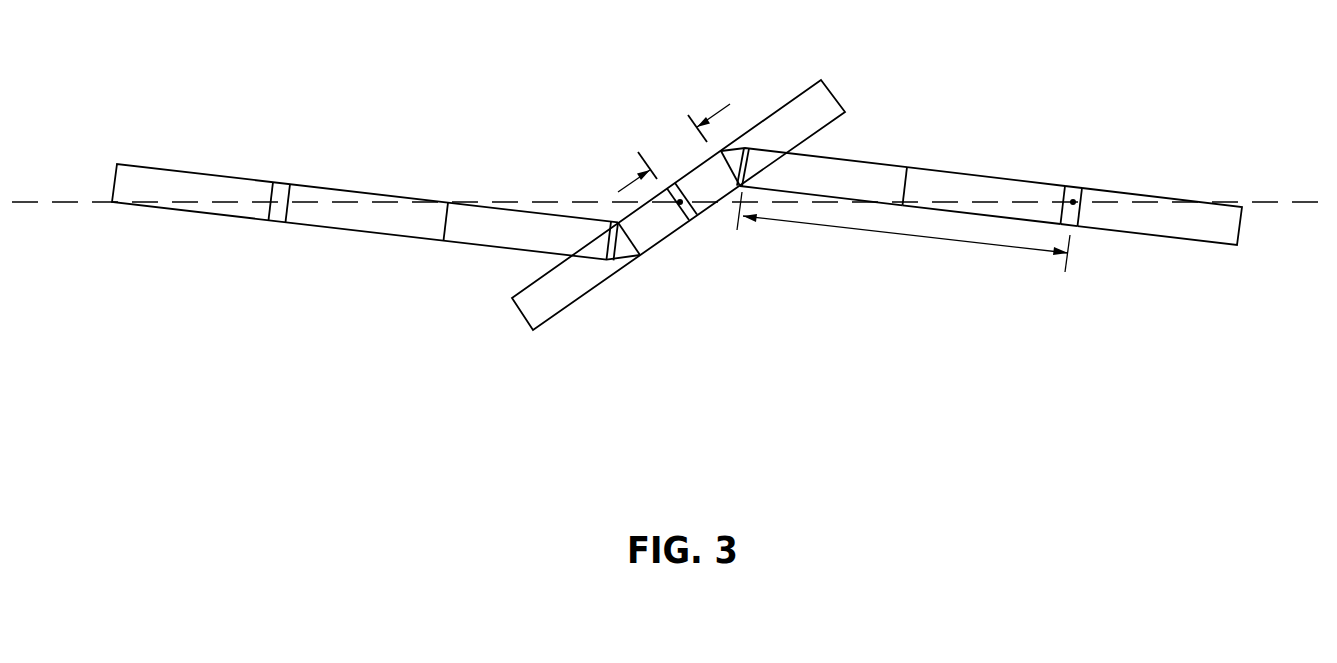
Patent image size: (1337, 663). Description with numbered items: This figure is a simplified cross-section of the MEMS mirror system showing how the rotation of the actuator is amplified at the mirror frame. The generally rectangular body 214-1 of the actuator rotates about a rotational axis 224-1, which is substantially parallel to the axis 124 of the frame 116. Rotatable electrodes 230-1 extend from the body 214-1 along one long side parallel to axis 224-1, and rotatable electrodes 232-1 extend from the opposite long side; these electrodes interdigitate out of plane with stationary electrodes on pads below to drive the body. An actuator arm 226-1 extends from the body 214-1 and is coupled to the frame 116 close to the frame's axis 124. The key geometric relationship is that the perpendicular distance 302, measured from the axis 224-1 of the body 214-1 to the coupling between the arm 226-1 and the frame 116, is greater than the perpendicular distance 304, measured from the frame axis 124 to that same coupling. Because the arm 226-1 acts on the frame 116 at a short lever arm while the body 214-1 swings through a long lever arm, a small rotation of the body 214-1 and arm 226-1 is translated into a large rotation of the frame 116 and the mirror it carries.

The frame 116 is at (827, 92).
The axis 124 is at (679, 206).
The perpendicular distance 304 is at (731, 104).
The perpendicular distance 302 is at (920, 237).
The actuator arm 226-1 is at (877, 168).
The rotatable electrodes 232-1 is at (988, 178).
The rotational axis 224-1 is at (1078, 188).
The body 214-1 is at (1083, 190).
The rotatable electrodes 230-1 is at (1175, 230).